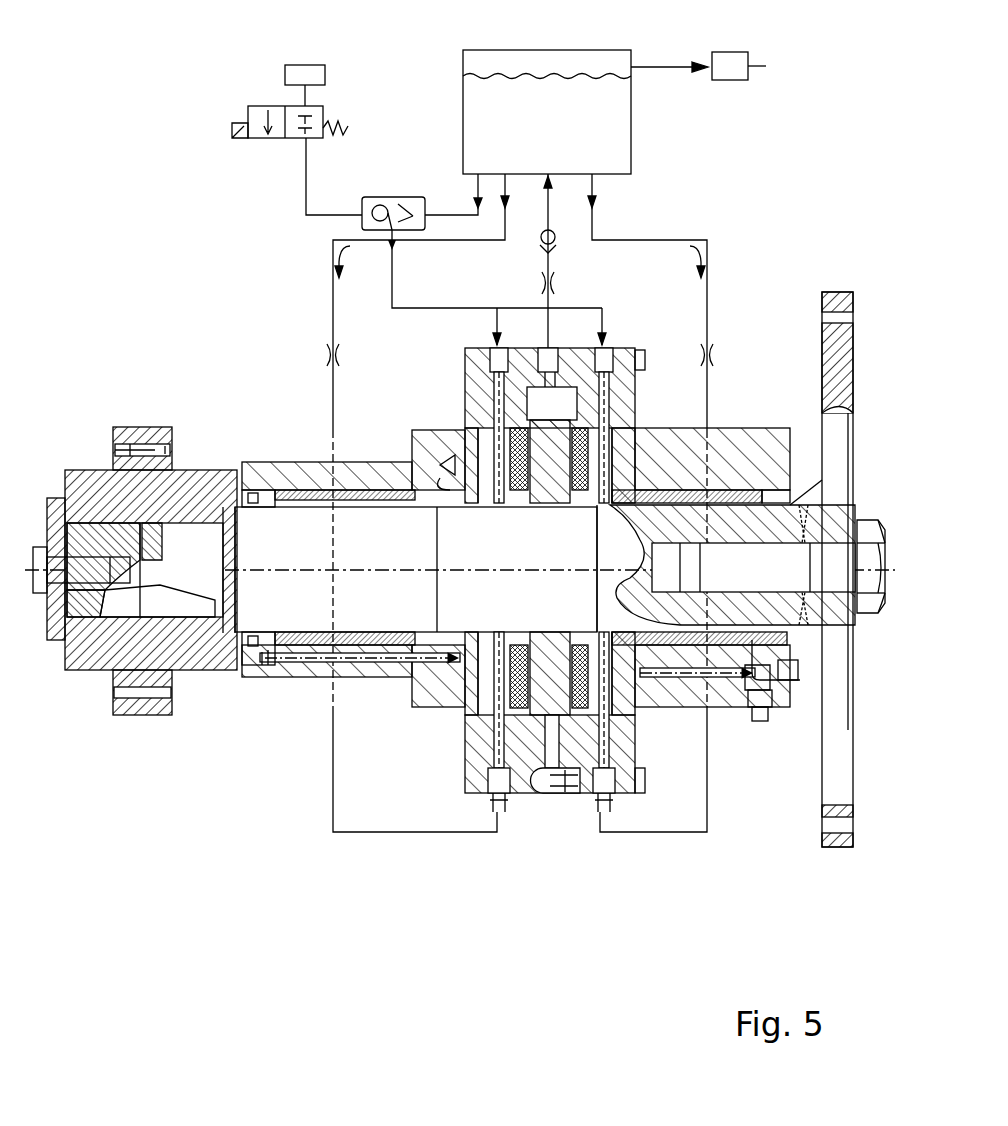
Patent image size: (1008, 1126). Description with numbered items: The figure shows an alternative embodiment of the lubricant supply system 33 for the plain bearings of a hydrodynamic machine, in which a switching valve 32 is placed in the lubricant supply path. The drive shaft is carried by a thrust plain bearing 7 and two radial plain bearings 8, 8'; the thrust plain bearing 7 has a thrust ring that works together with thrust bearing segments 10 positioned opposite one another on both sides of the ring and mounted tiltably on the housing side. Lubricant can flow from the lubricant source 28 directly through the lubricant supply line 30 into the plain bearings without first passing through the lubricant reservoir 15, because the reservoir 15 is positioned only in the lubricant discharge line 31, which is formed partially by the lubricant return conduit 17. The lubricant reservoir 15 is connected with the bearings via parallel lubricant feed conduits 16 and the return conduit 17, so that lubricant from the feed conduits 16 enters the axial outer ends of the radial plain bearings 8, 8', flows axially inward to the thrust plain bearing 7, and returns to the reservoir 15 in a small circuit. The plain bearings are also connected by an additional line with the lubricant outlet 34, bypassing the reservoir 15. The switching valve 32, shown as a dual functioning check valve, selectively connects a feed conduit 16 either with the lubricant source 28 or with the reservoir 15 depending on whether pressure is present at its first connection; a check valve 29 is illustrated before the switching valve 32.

The thrust plain bearing 7 is at (557, 808).
The radial plain bearing 8 is at (353, 599).
The radial plain bearing 8' is at (706, 607).
The thrust bearing segments 10 is at (534, 716).
The lubricant reservoir 15 is at (631, 148).
The lubricant feed conduits 16 is at (333, 392).
The lubricant return conduit 17 is at (552, 268).
The lubricant source 28 is at (325, 73).
The check valve 29 is at (268, 134).
The lubricant supply line 30 is at (306, 220).
The lubricant discharge line 31 is at (636, 62).
The switching valve 32 is at (390, 197).
The lubricant supply system 33 is at (756, 176).
The lubricant outlet 34 is at (761, 68).